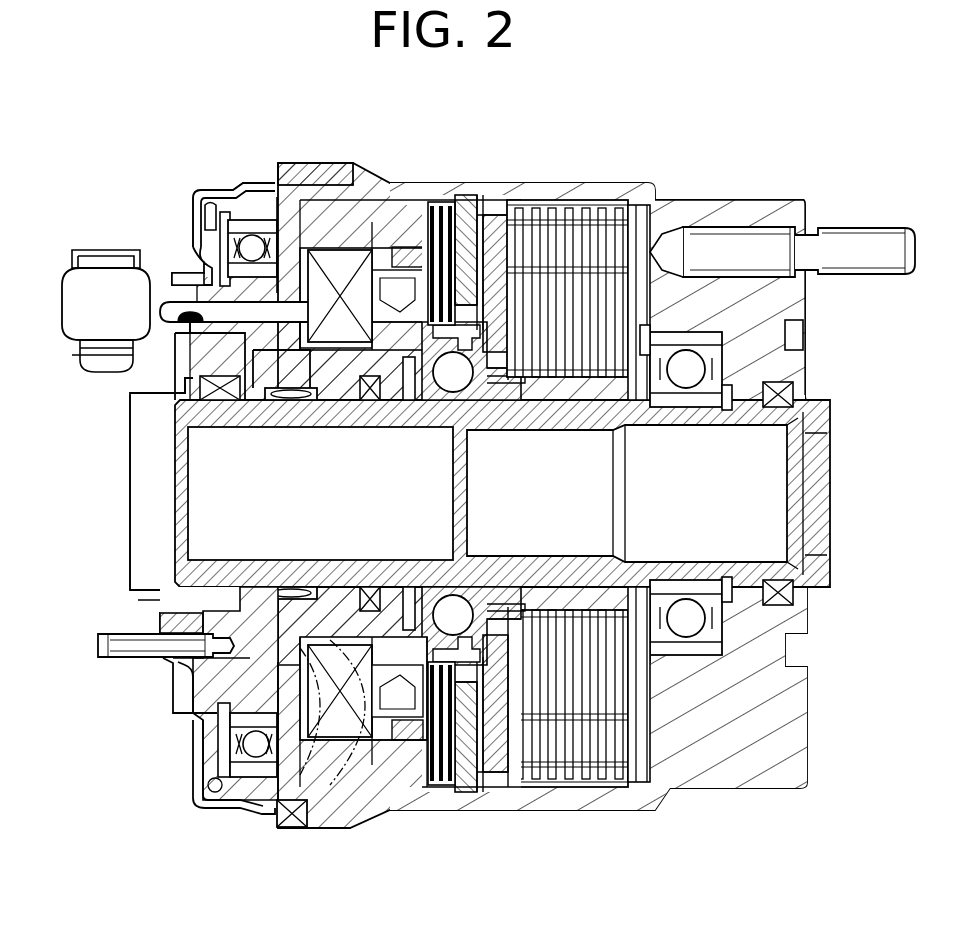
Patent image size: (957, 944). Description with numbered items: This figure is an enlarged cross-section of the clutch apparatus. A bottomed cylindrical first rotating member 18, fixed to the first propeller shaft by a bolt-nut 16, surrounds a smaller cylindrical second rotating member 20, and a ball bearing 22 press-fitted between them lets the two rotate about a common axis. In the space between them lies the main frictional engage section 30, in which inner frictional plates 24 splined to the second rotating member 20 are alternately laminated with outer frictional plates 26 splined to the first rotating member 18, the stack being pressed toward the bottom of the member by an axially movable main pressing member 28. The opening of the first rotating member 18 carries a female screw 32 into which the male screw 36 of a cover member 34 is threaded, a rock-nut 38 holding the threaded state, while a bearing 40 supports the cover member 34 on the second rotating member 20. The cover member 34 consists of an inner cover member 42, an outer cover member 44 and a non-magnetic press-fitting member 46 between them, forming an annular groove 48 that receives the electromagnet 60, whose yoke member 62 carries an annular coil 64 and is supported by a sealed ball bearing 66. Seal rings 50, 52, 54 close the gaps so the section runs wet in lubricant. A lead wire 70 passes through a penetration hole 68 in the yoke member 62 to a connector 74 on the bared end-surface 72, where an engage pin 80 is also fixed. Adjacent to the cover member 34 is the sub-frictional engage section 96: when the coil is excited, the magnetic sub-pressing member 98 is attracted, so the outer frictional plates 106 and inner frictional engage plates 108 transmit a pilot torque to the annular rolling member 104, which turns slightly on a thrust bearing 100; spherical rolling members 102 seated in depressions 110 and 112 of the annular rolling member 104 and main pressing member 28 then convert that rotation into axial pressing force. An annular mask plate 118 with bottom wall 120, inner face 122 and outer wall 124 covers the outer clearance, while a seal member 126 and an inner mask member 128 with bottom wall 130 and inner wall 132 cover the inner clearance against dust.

The bolt-nut 16 is at (878, 240).
The first rotating member 18 is at (757, 208).
The second rotating member 20 is at (813, 417).
The ball bearing 22 is at (785, 337).
The inner frictional plates 24 is at (636, 270).
The outer frictional plates 26 is at (622, 203).
The main pressing member 28 is at (463, 408).
The main frictional engage section 30 is at (497, 181).
The female screw 32 is at (355, 198).
The cover member 34 is at (385, 415).
The male screw 36 is at (273, 187).
The rock-nut 38 is at (295, 168).
The bearing 40 is at (290, 410).
The inner cover member 42 is at (345, 410).
The outer cover member 44 is at (312, 185).
The press-fitting member 46 is at (412, 205).
The annular groove 48 is at (277, 820).
The seal ring 50 is at (797, 585).
The seal ring 52 is at (370, 587).
The seal ring 54 is at (385, 807).
The electromagnet 60 is at (158, 672).
The yoke member 62 is at (200, 688).
The annular coil 64 is at (228, 742).
The sealed ball bearing 66 is at (215, 750).
The penetration hole 68 is at (160, 364).
The lead wire 70 is at (153, 407).
The bared end-surface 72 is at (192, 302).
The connector 74 is at (77, 295).
The engage pin 80 is at (110, 647).
The sub-frictional engage section 96 is at (440, 183).
The sub-pressing member 98 is at (470, 773).
The thrust bearing 100 is at (408, 403).
The spherical rolling members 102 is at (470, 430).
The annular rolling member 104 is at (433, 405).
The outer frictional plates 106 is at (458, 198).
The inner frictional engage plates 108 is at (500, 405).
The depressions 110 is at (440, 600).
The depressions 112 is at (478, 598).
The annular mask plate 118 is at (181, 191).
The bottom wall 120 is at (197, 223).
The inner face 122 is at (240, 188).
The outer wall 124 is at (210, 187).
The seal member 126 is at (215, 422).
The inner mask member 128 is at (130, 515).
The bottom wall 130 is at (143, 602).
The inner wall 132 is at (150, 538).